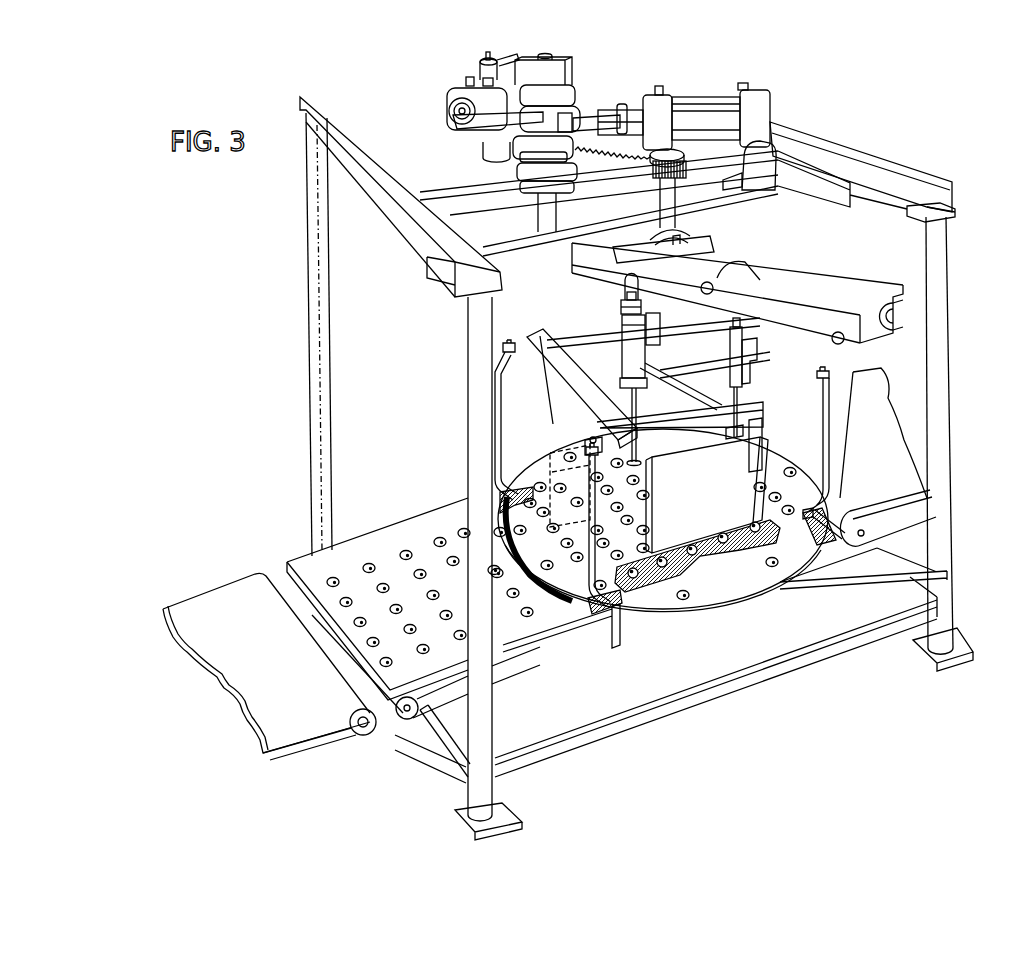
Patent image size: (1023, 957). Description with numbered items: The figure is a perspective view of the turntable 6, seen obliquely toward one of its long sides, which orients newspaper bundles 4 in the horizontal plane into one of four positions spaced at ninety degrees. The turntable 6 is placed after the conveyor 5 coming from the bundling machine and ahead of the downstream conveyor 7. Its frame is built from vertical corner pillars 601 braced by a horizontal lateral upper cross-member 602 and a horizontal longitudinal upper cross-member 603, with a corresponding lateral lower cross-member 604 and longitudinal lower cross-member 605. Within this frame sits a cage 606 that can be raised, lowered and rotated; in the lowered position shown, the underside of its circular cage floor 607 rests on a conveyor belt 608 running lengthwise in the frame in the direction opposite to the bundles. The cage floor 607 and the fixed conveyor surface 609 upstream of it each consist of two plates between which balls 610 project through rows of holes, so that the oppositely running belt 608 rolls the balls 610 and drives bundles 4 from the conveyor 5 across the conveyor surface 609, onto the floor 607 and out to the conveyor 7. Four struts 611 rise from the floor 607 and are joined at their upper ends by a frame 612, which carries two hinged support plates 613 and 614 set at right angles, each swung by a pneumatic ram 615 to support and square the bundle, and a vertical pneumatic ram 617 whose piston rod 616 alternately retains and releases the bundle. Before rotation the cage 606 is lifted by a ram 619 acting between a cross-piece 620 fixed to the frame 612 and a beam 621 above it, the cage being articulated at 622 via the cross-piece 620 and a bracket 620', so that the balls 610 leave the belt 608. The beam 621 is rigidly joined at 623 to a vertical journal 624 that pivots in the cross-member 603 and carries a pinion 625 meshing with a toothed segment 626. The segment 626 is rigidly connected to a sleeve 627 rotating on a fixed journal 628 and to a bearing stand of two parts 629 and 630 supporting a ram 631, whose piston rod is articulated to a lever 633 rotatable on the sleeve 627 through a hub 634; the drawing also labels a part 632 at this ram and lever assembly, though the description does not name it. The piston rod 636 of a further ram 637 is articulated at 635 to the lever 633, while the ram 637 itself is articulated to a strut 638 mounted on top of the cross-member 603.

The newspaper bundle 4 is at (556, 442).
The conveyor 5 is at (292, 663).
The turntable 6 is at (851, 135).
The conveyor 7 is at (861, 468).
The vertical corner pillar 601 is at (318, 307).
The horizontal lateral upper cross-member 602 is at (377, 160).
The horizontal longitudinal upper cross-member 603 is at (457, 193).
The horizontal lateral lower cross-member 604 is at (436, 734).
The horizontal longitudinal lower cross-member 605 is at (657, 704).
The cage 606 is at (562, 328).
The cage floor 607 is at (556, 555).
The conveyor belt 608 is at (603, 612).
The conveyor surface 609 is at (394, 559).
The balls 610 is at (527, 617).
The strut 611 is at (498, 413).
The frame 612 is at (540, 337).
The support plate 613 is at (710, 491).
The support plate 614 is at (757, 432).
The pneumatic ram 615 is at (730, 357).
The piston rod 616 is at (637, 410).
The pneumatic ram 617 is at (624, 347).
The ram 619 is at (622, 313).
The cross-piece 620 is at (668, 340).
The bracket 620' is at (775, 361).
The beam 621 is at (778, 323).
The articulated connection 622 is at (866, 330).
The rigid connection 623 is at (690, 232).
The vertical journal 624 is at (683, 158).
The pinion 625 is at (682, 172).
The toothed segment 626 is at (620, 181).
The sleeve 627 is at (567, 91).
The journal 628 is at (543, 54).
The bearing stand part 629 is at (572, 143).
The bearing stand part 630 is at (553, 70).
The ram 631 is at (458, 94).
The disc 632 is at (452, 115).
The lever 633 is at (487, 126).
The hub 634 is at (580, 110).
The articulation point 635 is at (562, 122).
The piston rod 636 is at (622, 103).
The ram 637 is at (706, 116).
The strut 638 is at (775, 151).